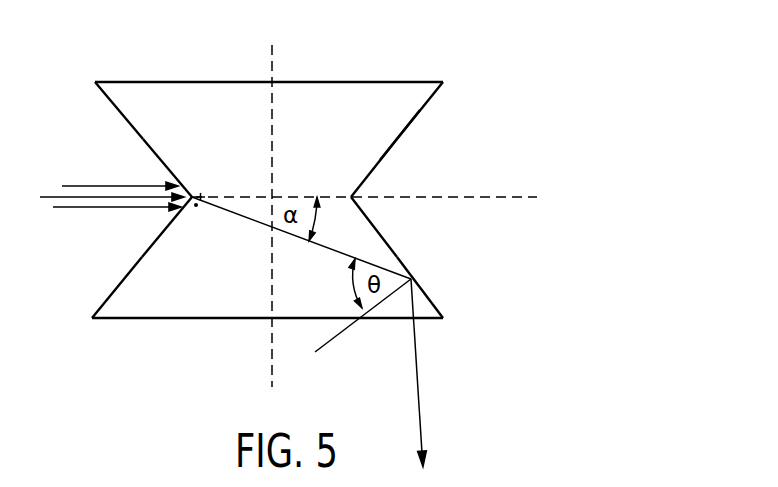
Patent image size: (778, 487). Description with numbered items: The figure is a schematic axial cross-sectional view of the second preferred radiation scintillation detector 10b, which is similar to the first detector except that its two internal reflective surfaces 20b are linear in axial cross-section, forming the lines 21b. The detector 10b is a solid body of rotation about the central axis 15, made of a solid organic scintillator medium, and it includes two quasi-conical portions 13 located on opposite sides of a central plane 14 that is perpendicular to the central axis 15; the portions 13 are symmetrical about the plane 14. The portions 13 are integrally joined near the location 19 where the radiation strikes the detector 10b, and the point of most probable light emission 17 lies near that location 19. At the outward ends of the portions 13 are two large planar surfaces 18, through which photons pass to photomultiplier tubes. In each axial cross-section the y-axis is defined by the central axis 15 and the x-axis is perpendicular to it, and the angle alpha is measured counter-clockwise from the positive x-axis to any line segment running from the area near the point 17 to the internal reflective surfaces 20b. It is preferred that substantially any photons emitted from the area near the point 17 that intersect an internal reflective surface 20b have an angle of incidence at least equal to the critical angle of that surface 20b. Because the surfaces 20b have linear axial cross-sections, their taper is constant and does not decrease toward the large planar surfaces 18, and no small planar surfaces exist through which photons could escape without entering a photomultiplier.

The second radiation scintillation detector 10b is at (386, 82).
The quasi-conical portion 13 is at (396, 141).
The central plane 14 is at (258, 197).
The central axis 15 is at (274, 98).
The point of most probable light emission 17 is at (203, 195).
The large planar surface 18 is at (138, 82).
The location where radiation strikes the detector 19 is at (196, 207).
The internal reflective surface 20b is at (151, 146).
The line 21b is at (116, 108).